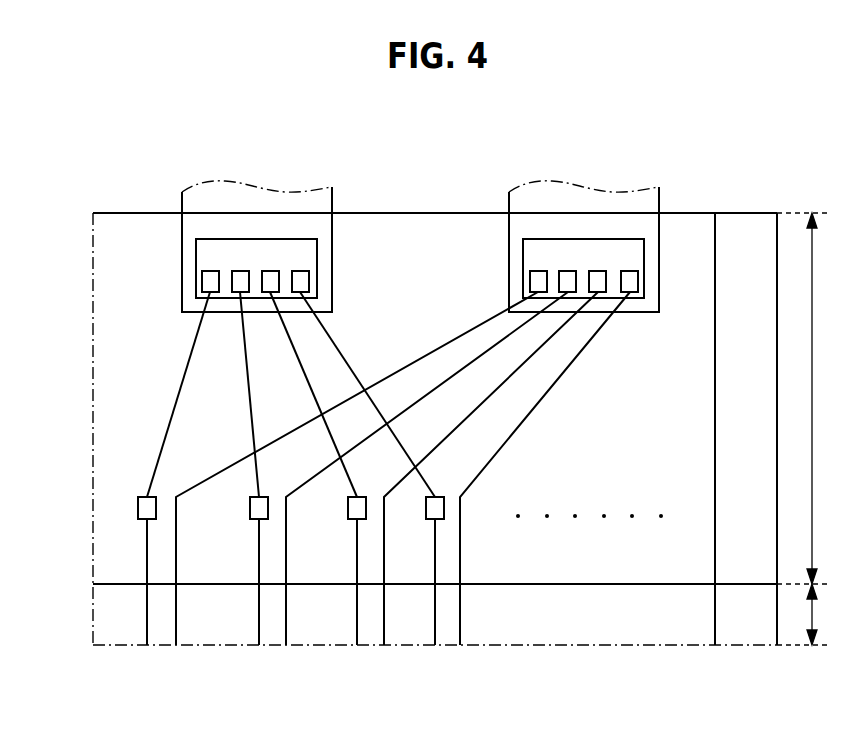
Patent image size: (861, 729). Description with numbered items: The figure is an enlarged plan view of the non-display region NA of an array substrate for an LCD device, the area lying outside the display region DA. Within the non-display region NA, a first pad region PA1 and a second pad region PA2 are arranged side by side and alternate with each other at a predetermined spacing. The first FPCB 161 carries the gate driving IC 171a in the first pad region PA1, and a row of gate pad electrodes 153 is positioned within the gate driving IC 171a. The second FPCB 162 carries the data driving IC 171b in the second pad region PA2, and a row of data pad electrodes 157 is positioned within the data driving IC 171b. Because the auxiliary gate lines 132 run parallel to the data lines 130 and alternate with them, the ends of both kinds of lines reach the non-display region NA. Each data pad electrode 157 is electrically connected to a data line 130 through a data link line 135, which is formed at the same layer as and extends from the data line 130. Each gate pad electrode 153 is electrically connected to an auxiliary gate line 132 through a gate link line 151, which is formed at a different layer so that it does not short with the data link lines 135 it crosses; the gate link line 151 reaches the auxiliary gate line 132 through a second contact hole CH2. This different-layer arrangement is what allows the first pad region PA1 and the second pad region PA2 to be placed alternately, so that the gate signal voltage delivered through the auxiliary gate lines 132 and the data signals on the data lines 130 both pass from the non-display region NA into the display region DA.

The first FPCB 161 is at (208, 198).
The second FPCB 162 is at (545, 198).
The gate driving IC 171a is at (275, 250).
The data driving IC 171b is at (593, 250).
The gate pad electrode 153 is at (208, 282).
The data pad electrode 157 is at (537, 282).
The gate link line 151 is at (328, 333).
The data link line 135 is at (558, 380).
The second contact hole CH2 is at (144, 490).
The data line 130 is at (177, 552).
The auxiliary gate line 132 is at (147, 550).
The first pad region PA1 is at (312, 228).
The second pad region PA2 is at (639, 228).
The non-display region NA is at (811, 398).
The display area DA is at (811, 614).